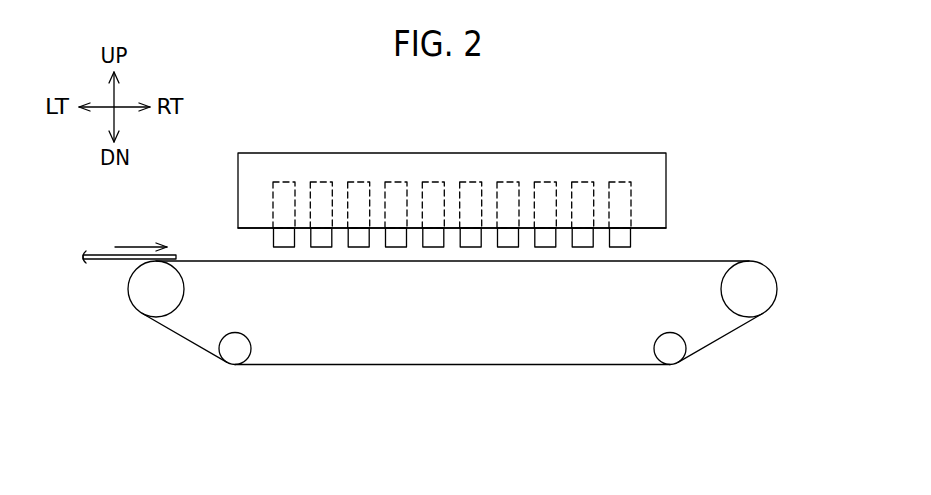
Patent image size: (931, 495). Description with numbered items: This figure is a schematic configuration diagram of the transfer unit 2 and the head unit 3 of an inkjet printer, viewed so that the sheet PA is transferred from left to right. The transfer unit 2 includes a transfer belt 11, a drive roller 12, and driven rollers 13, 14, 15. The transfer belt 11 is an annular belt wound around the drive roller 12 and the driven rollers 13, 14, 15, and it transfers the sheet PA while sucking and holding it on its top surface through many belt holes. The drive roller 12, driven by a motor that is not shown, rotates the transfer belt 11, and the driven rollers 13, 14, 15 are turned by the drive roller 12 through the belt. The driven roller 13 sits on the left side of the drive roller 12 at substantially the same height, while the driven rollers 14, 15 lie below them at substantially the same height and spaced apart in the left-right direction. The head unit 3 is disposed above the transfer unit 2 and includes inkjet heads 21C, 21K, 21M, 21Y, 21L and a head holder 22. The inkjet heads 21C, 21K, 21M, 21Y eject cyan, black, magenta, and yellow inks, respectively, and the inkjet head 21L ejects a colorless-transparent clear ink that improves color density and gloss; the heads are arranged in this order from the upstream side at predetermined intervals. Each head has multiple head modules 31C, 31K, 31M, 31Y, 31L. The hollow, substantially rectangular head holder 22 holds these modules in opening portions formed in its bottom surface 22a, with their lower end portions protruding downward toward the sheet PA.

The transfer unit 2 is at (453, 324).
The head unit 3 is at (486, 209).
The transfer belt 11 is at (697, 260).
The drive roller 12 is at (777, 288).
The driven roller 13 is at (129, 291).
The driven roller 14 is at (237, 356).
The driven roller 15 is at (672, 356).
The inkjet head 21C is at (303, 176).
The inkjet head 21K is at (378, 176).
The inkjet head 21M is at (452, 176).
The inkjet head 21Y is at (527, 176).
The inkjet head 21L is at (601, 176).
The head holder 22 is at (486, 229).
The bottom surface 22a is at (646, 230).
The head module 31C is at (284, 247).
The head module 31K is at (359, 247).
The head module 31M is at (433, 247).
The head module 31Y is at (508, 247).
The head module 31L is at (620, 247).
The sheet PA is at (97, 254).